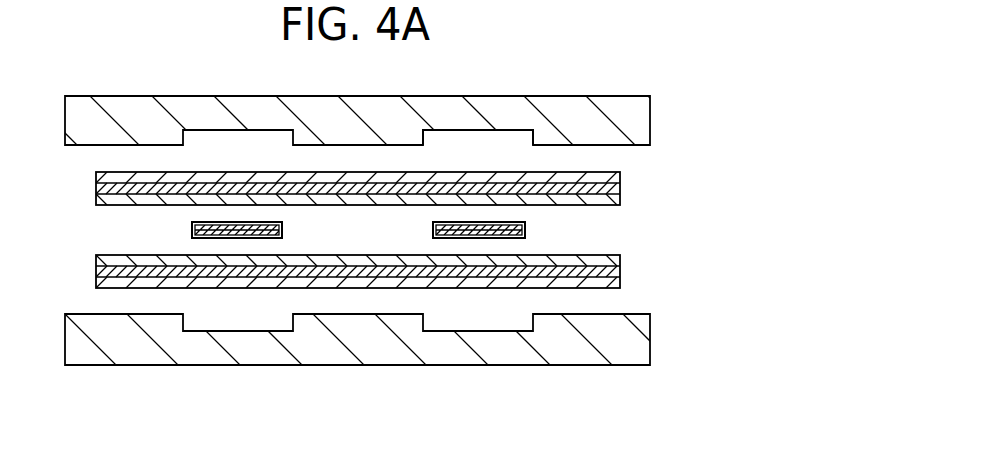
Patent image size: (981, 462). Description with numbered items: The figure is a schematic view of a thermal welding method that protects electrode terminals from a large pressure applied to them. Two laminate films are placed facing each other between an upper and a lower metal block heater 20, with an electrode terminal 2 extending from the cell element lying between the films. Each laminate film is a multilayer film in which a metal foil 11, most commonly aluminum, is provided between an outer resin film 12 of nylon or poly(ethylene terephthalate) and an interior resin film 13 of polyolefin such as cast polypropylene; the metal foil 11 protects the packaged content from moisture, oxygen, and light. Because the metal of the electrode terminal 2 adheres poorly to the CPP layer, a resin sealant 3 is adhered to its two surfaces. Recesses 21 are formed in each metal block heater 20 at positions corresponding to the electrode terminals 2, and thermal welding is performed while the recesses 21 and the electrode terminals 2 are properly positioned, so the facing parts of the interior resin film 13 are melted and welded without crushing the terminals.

The metal block heater 20 is at (640, 123).
The recess 21 is at (506, 133).
The resin film 13 is at (610, 205).
The resin film 12 is at (617, 179).
The metal foil 11 is at (617, 192).
The electrode terminal 2 is at (470, 235).
The sealant 3 is at (527, 225).